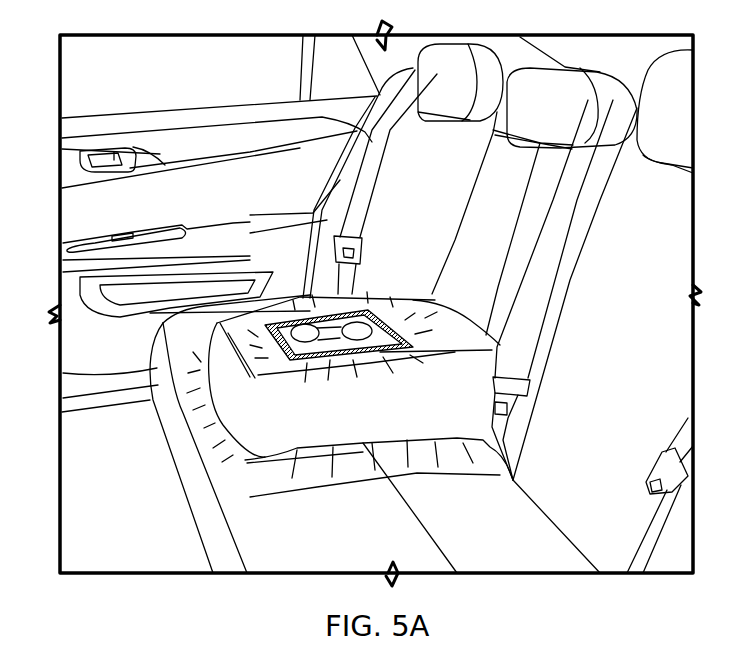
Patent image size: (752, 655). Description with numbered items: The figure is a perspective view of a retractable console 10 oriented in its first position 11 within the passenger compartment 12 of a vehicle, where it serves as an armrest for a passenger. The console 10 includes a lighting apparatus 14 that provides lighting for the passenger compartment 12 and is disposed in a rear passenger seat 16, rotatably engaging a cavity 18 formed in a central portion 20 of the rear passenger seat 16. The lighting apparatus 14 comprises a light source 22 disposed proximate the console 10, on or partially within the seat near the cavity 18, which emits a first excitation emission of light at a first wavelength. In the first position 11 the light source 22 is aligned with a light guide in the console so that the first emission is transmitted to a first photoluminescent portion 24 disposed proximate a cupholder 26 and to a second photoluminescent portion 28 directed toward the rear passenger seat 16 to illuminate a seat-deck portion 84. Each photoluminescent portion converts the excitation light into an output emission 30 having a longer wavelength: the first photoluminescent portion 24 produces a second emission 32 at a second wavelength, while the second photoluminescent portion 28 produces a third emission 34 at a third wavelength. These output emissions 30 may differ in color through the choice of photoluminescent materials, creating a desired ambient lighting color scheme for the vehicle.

The retractable console 10 is at (325, 358).
The first position 11 is at (282, 306).
The passenger compartment 12 is at (128, 52).
The lighting apparatus 14 is at (414, 254).
The rear passenger seat 16 is at (648, 285).
The cavity 18 is at (583, 223).
The central portion 20 is at (530, 214).
The light source 22 is at (478, 402).
The first photoluminescent portion 24 is at (432, 299).
The cupholder 26 is at (352, 322).
The second photoluminescent portion 28 is at (232, 446).
The output emission 30 is at (365, 436).
The second emission 32 is at (372, 366).
The third emission 34 is at (332, 467).
The seat-deck portion 84 is at (248, 533).